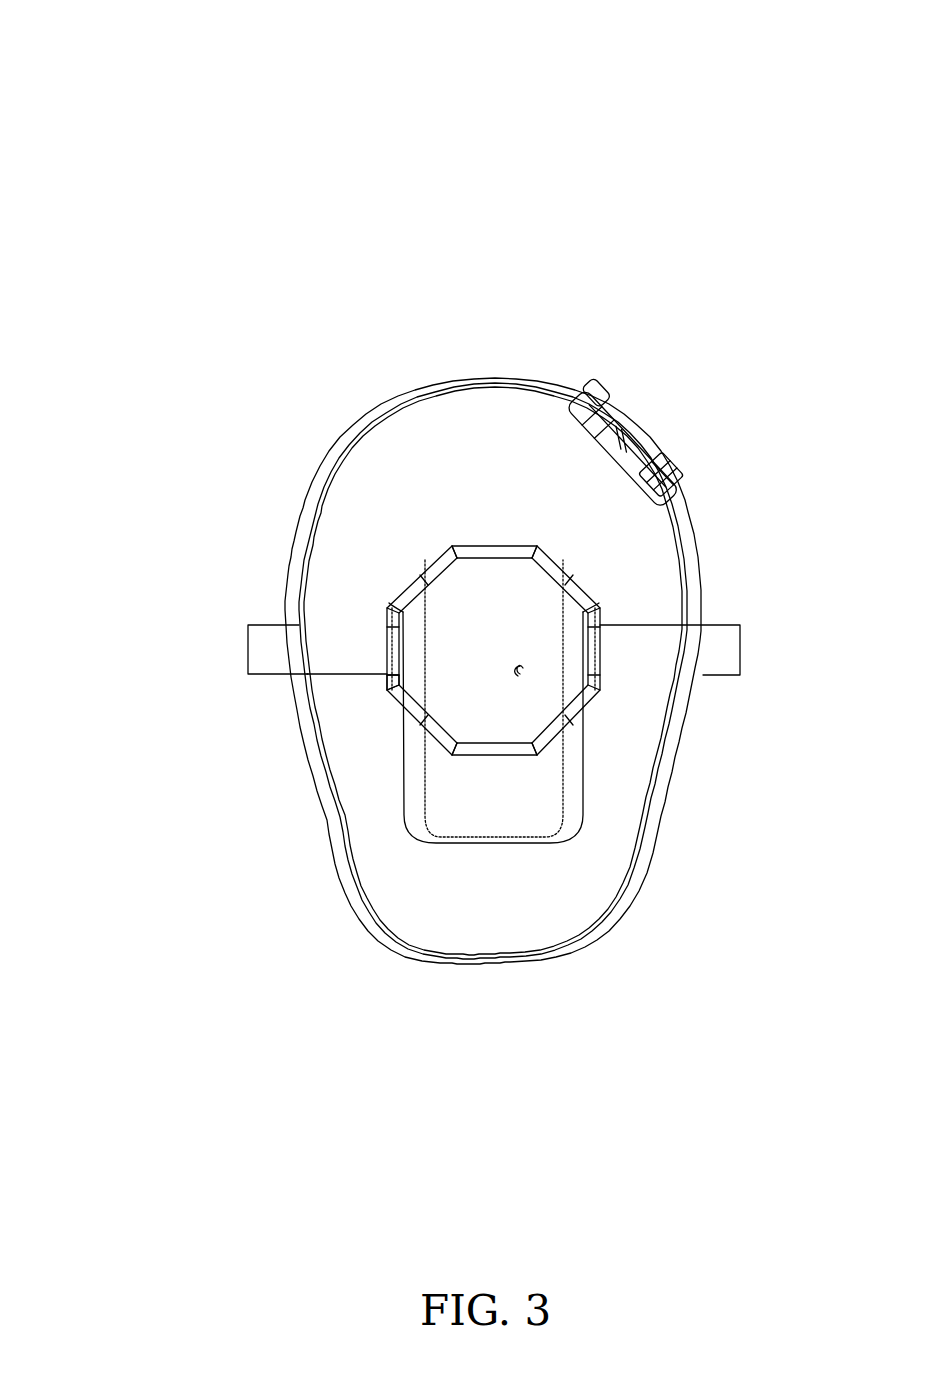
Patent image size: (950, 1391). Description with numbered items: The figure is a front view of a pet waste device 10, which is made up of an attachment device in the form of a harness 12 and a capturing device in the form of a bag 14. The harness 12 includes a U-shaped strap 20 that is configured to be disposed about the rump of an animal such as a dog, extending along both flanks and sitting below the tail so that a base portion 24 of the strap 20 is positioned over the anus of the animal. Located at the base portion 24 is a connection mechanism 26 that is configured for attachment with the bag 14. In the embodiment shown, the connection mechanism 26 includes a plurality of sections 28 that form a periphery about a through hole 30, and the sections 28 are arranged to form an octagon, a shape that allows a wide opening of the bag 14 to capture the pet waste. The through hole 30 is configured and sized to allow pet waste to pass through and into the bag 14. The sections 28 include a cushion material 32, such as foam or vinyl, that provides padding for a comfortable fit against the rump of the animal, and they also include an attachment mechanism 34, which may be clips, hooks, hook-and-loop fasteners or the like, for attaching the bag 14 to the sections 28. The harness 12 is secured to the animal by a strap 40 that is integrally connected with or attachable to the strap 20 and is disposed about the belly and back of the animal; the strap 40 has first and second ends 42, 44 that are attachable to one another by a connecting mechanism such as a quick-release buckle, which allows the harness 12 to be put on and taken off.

The pet waste device 10 is at (128, 180).
The harness 12 is at (738, 548).
The bag 14 is at (533, 822).
The strap 20 is at (723, 647).
The base portion 24 is at (386, 691).
The connection mechanism 26 is at (385, 700).
The sections 28 is at (537, 546).
The through hole 30 is at (523, 668).
The cushion material 32 is at (492, 752).
The attachment mechanism 34 is at (425, 577).
The strap 40 is at (632, 905).
The first end 42 is at (612, 403).
The second end 44 is at (670, 467).